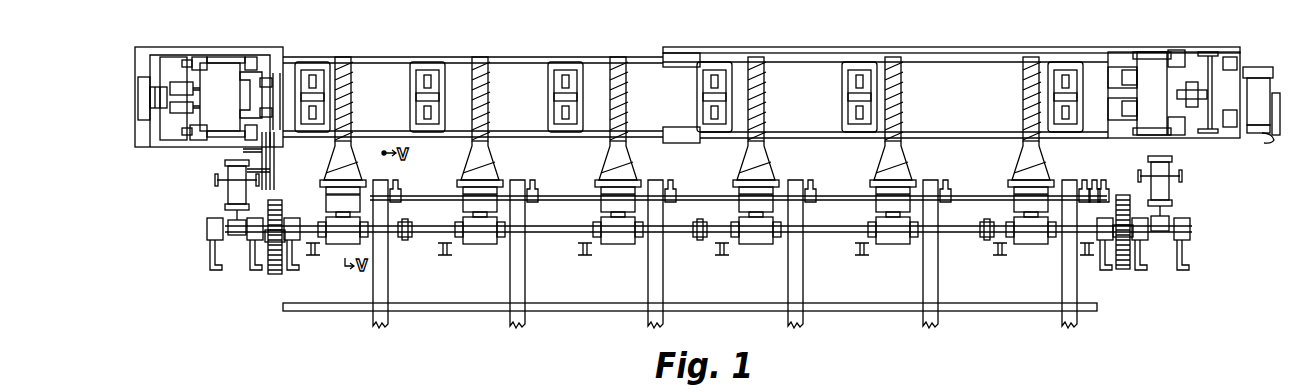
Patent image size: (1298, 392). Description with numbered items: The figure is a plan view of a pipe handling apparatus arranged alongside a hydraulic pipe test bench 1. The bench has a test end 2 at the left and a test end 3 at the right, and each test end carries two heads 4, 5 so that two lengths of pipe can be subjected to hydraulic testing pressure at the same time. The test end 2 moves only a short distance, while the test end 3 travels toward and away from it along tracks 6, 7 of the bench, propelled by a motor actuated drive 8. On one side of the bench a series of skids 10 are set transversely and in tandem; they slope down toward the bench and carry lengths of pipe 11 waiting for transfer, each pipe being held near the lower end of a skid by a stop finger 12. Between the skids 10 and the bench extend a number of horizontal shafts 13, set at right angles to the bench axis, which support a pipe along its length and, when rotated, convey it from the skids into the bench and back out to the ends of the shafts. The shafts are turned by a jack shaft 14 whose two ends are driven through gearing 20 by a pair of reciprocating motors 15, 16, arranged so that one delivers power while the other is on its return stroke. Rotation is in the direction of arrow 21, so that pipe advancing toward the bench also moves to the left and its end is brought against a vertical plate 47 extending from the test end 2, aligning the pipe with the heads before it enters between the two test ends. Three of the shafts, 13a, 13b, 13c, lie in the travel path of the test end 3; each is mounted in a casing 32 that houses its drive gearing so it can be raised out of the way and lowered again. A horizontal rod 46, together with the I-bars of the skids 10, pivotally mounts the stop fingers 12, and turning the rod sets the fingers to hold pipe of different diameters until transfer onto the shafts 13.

The test bench 1 is at (1178, 47).
The test end 2 is at (240, 47).
The test end 3 is at (1241, 52).
The head 4 is at (285, 72).
The head 5 is at (287, 138).
The track 6 is at (942, 46).
The track 7 is at (964, 140).
The motor actuated drive 8 is at (1273, 138).
The skids 10 is at (388, 324).
The lengths of pipe 11 is at (1006, 300).
The stop finger 12 is at (396, 192).
The horizontal shafts 13 is at (354, 93).
The shaft 13a is at (1022, 100).
The shaft 13b is at (903, 104).
The shaft 13c is at (766, 98).
The jack shaft 14 is at (394, 234).
The motor 15 is at (226, 198).
The motor 16 is at (1176, 188).
The gearing 20 is at (274, 264).
The arrow 21 is at (351, 150).
The casing 32 is at (455, 258).
The rod 46 is at (559, 206).
The plate 47 is at (274, 172).